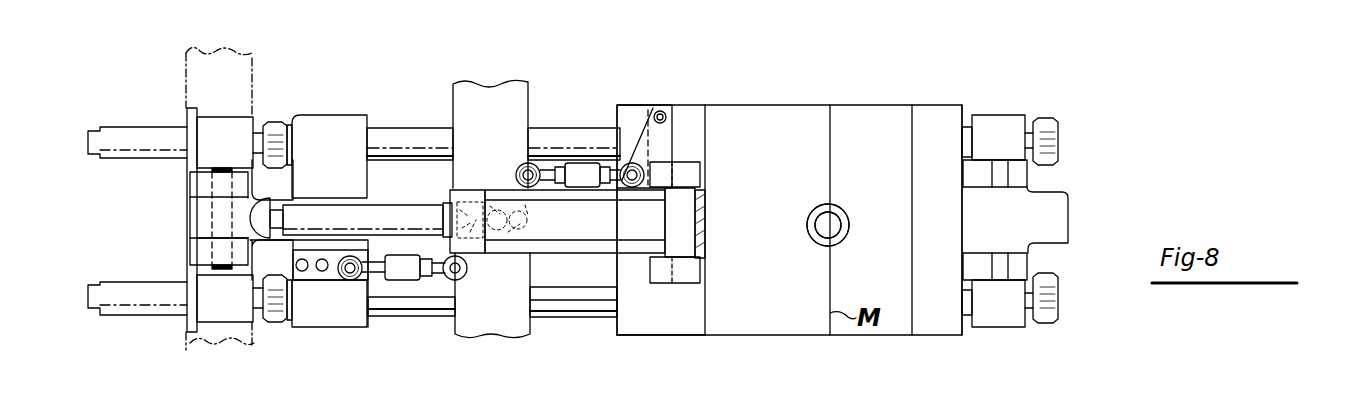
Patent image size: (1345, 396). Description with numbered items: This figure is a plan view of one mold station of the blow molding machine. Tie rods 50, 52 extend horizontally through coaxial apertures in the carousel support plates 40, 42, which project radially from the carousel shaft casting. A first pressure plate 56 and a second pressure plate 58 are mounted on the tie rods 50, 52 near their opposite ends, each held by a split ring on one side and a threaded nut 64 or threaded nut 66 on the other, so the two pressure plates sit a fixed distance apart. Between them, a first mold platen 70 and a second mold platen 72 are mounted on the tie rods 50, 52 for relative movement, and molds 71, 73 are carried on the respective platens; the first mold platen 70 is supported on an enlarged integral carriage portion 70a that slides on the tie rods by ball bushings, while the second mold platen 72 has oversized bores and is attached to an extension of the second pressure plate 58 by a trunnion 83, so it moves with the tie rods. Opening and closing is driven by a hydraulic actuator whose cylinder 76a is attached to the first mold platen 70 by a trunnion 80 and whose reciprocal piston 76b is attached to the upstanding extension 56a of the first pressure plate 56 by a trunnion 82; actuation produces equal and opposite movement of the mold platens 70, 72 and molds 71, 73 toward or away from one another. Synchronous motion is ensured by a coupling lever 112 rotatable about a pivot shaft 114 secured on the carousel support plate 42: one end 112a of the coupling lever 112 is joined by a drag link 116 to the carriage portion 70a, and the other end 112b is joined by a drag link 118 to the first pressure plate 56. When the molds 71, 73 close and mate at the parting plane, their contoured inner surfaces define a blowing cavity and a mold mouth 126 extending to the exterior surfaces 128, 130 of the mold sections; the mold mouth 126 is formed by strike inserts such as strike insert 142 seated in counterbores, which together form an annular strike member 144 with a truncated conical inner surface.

The carousel support plate 40 is at (186, 85).
The carousel support plate 42 is at (510, 322).
The tie-rod 50 is at (405, 137).
The tie-rod 52 is at (408, 303).
The first pressure plate 56 is at (330, 120).
The upstanding extension 56a is at (198, 252).
The second pressure plate 58 is at (1010, 123).
The threaded nut 64 is at (277, 118).
The threaded nut 66 is at (1047, 165).
The first mold platen 70 is at (724, 318).
The carriage portion 70a is at (634, 318).
The mold 71 is at (783, 115).
The second mold platen 72 is at (945, 320).
The mold 73 is at (883, 113).
The cylinder 76a is at (557, 221).
The reciprocal piston 76b is at (398, 215).
The trunnion 80 is at (690, 220).
The trunnion 82 is at (215, 215).
The trunnion 83 is at (1002, 267).
The coupling lever 112 is at (472, 250).
The end of coupling lever 112a is at (530, 164).
The end of coupling lever 112b is at (463, 278).
The pivot shaft 114 is at (493, 190).
The drag link 116 is at (583, 160).
The drag link 118 is at (393, 280).
The mold mouth 126 is at (838, 225).
The exterior surface 128 is at (785, 272).
The exterior surface 130 is at (873, 275).
The strike insert 142 is at (818, 210).
The annular strike member 144 is at (837, 206).